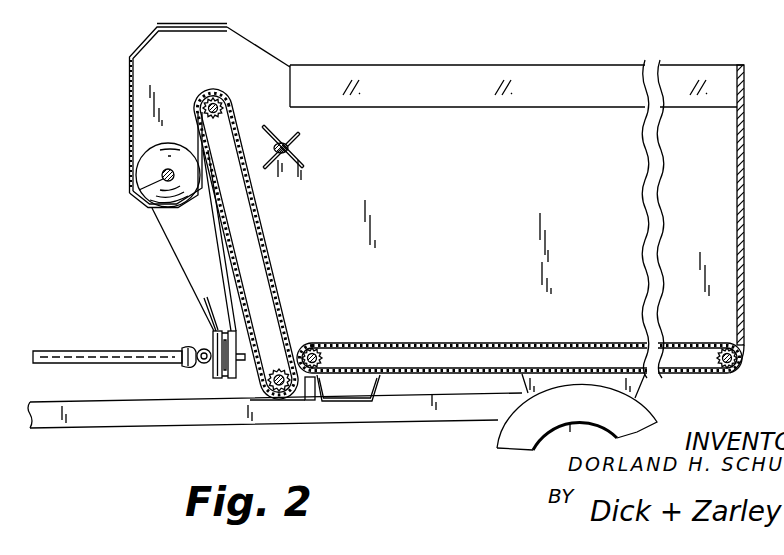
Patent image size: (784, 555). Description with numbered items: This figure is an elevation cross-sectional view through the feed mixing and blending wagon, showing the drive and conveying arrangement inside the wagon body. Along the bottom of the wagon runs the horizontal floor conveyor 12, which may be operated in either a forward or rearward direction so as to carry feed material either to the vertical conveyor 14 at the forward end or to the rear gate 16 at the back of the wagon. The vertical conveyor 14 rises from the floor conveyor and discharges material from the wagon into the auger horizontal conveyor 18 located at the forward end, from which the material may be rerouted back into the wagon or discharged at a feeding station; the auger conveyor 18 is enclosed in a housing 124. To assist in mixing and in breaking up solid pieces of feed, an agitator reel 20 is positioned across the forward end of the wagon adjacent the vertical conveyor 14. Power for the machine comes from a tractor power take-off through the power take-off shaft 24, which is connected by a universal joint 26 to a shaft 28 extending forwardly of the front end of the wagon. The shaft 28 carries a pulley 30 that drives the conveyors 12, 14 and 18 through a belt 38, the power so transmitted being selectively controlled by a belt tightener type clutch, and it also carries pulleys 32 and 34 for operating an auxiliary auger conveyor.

The horizontal floor conveyor 12 is at (410, 342).
The vertical conveyor 14 is at (266, 242).
The rear gate 16 is at (735, 162).
The auger horizontal conveyor 18 is at (145, 163).
The agitator reel 20 is at (298, 147).
The power take-off shaft 24 is at (86, 350).
The universal joint 26 is at (200, 347).
The shaft 28 is at (217, 368).
The pulley 30 is at (232, 380).
The pulley 32 is at (215, 380).
The pulley 34 is at (229, 381).
The belt 38 is at (168, 245).
The housing 124 is at (138, 48).